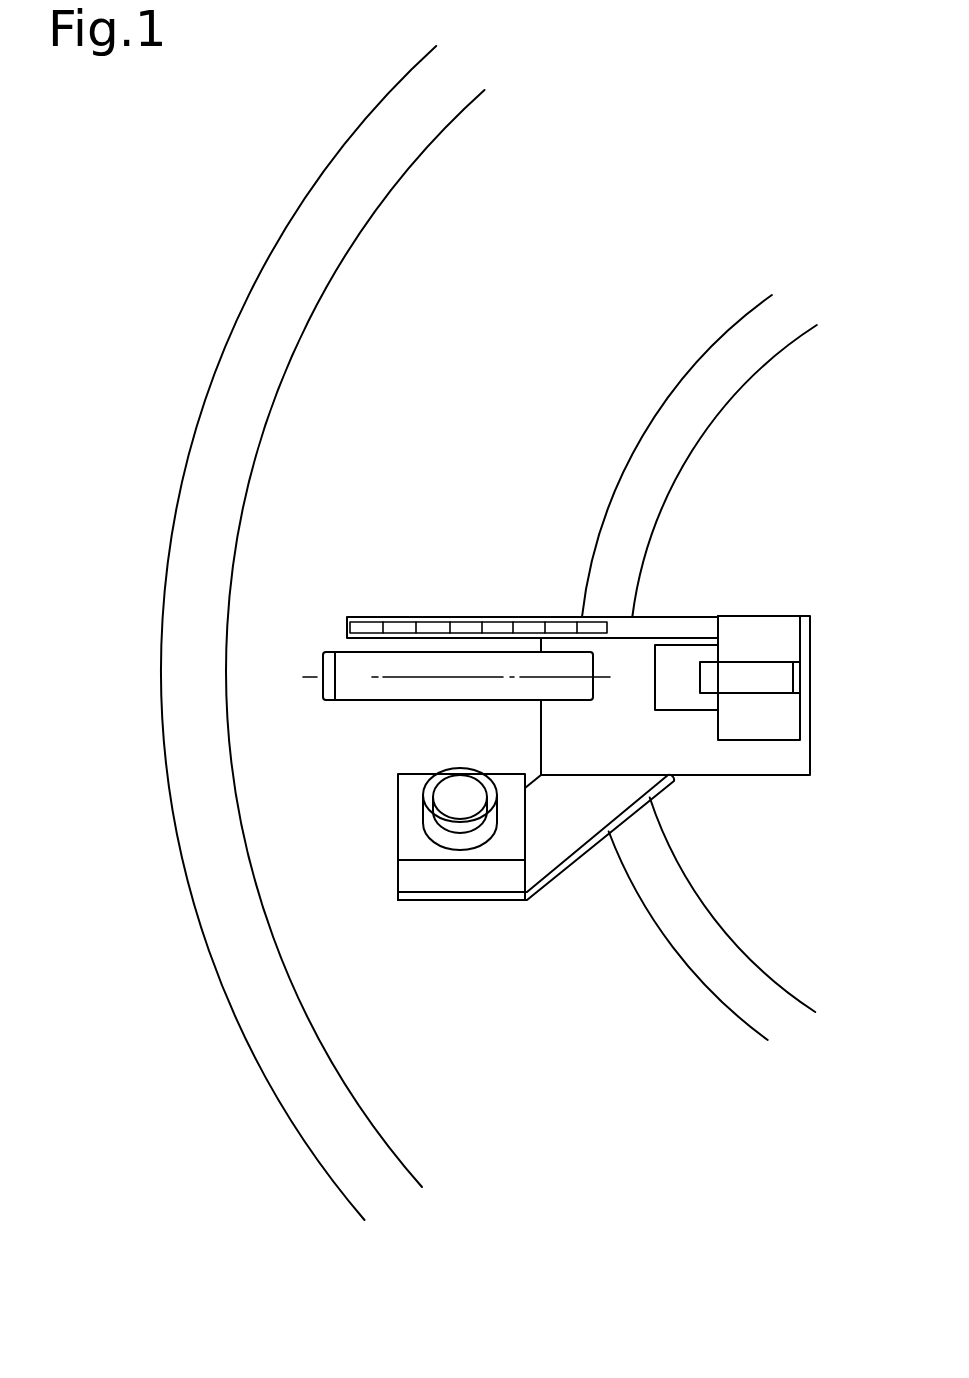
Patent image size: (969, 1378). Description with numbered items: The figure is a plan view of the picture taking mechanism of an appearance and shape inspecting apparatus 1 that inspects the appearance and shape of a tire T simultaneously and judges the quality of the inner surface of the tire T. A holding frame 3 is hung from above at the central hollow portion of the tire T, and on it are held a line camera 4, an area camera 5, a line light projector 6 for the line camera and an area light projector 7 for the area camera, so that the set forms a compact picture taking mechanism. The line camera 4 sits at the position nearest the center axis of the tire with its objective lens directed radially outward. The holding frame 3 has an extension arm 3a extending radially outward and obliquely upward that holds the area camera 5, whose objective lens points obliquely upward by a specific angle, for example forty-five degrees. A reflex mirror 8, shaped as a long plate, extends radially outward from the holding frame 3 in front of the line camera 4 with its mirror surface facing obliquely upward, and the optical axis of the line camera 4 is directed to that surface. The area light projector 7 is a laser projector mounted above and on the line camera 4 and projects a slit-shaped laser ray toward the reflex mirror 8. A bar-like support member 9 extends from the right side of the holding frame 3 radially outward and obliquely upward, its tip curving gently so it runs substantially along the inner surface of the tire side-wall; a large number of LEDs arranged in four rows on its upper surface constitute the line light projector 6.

The tire T is at (193, 389).
The appearance and shape inspecting apparatus 1 is at (565, 549).
The holding frame 3 is at (722, 777).
The extension arm 3a is at (573, 866).
The line camera 4 is at (768, 741).
The area camera 5 is at (397, 821).
The line light projector 6 is at (465, 617).
The area light projector 7 is at (763, 662).
The reflex mirror 8 is at (421, 702).
The bar-like support member 9 is at (536, 617).